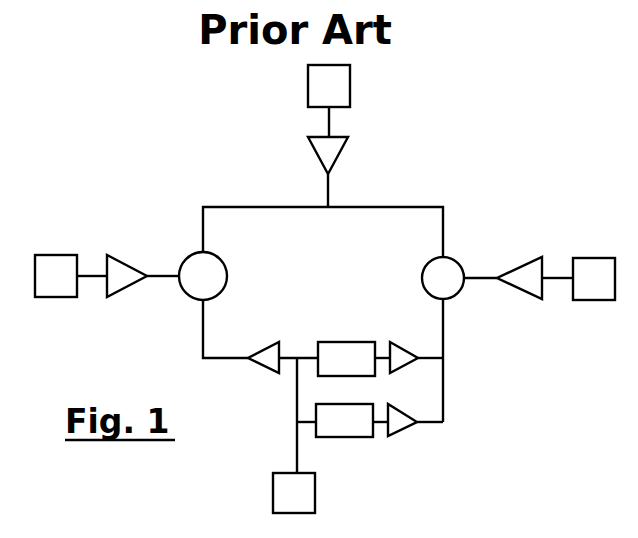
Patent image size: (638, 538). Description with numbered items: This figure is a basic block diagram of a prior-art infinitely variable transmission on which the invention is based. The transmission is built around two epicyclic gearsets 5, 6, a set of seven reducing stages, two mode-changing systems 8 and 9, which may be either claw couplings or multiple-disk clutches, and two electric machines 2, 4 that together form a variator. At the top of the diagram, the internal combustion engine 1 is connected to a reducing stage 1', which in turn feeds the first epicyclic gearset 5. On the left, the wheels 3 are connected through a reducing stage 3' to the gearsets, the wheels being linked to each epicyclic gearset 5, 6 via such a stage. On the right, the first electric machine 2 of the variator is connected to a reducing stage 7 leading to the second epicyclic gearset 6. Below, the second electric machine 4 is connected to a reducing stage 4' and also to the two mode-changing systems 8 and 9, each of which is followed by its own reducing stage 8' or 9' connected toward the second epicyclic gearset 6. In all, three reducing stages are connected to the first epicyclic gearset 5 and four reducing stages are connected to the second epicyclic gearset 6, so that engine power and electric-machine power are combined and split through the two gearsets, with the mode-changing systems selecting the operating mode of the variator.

The internal combustion engine 1 is at (329, 86).
The reducing stage 1' is at (344, 155).
The first electric machine 2 is at (594, 279).
The reducing stage 7 is at (517, 270).
The wheels 3 is at (56, 276).
The reducing stages 3' is at (127, 253).
The second electric machine 4 is at (294, 493).
The reducing stage 4' is at (262, 338).
The first epicyclic gearset 5 is at (203, 276).
The second epicyclic gearset 6 is at (443, 278).
The mode-changing system 8 is at (346, 359).
The reducing stage 8' is at (404, 338).
The mode-changing system 9 is at (344, 420).
The reducing stage 9' is at (417, 434).